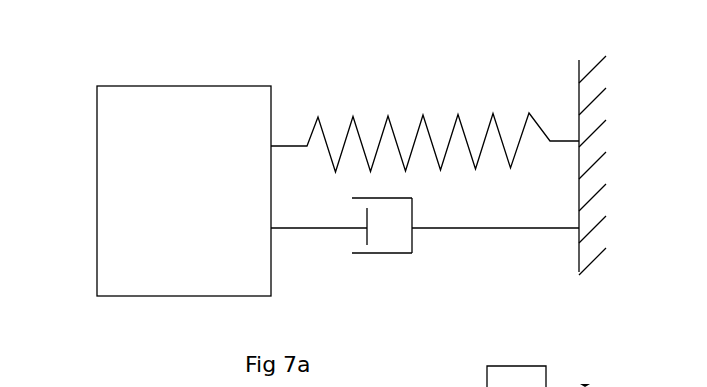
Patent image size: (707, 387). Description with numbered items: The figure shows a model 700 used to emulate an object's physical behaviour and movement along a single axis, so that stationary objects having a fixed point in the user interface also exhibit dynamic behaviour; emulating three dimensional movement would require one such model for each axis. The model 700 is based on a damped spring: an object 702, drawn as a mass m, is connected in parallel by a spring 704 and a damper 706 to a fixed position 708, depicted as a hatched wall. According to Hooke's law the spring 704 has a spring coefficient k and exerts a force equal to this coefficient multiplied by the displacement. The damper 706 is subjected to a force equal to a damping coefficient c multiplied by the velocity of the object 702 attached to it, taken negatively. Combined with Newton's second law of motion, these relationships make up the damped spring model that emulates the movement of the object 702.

The model 700 is at (351, 169).
The object 702 is at (172, 86).
The spring 704 is at (353, 117).
The damper 706 is at (392, 253).
The fixed position 708 is at (580, 112).